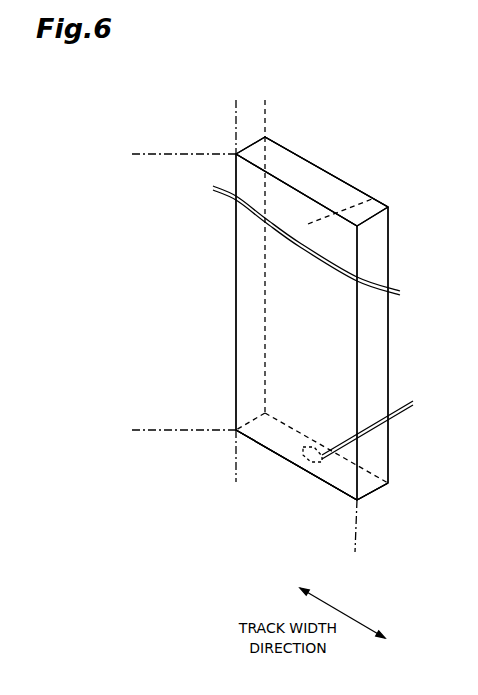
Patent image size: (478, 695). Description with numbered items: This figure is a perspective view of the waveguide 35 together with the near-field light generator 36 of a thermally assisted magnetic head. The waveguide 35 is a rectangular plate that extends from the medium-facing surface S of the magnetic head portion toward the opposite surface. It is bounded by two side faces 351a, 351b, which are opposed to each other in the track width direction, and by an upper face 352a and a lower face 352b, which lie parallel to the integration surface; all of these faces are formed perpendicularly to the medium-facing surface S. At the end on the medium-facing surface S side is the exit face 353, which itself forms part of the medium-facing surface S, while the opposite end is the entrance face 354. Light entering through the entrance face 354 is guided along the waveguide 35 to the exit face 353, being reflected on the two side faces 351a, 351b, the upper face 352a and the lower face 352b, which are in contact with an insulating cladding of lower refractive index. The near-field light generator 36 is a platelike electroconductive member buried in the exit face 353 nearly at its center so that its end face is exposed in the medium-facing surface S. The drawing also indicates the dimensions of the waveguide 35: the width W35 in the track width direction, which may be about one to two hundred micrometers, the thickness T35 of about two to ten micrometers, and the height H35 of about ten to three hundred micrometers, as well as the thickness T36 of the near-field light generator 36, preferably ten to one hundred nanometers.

The waveguide 35 is at (332, 298).
The side face 351a is at (247, 305).
The side face 351b is at (372, 340).
The upper face 352a is at (285, 198).
The lower face 352b is at (373, 200).
The exit face 353 is at (270, 451).
The entrance face 354 is at (333, 193).
The near-field light generator 36 is at (318, 462).
The medium-facing surface S is at (362, 502).
The thickness of the waveguide T35 is at (265, 107).
The height of the waveguide H35 is at (142, 154).
The width of the waveguide W35 is at (354, 545).
The thickness of the near-field light generator T36 is at (408, 383).